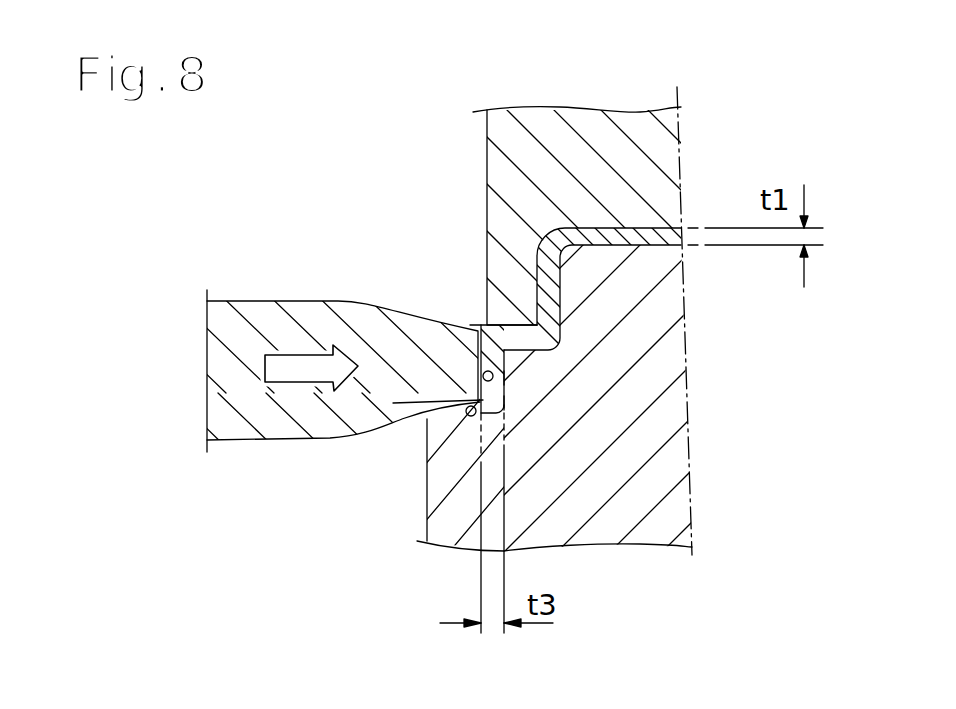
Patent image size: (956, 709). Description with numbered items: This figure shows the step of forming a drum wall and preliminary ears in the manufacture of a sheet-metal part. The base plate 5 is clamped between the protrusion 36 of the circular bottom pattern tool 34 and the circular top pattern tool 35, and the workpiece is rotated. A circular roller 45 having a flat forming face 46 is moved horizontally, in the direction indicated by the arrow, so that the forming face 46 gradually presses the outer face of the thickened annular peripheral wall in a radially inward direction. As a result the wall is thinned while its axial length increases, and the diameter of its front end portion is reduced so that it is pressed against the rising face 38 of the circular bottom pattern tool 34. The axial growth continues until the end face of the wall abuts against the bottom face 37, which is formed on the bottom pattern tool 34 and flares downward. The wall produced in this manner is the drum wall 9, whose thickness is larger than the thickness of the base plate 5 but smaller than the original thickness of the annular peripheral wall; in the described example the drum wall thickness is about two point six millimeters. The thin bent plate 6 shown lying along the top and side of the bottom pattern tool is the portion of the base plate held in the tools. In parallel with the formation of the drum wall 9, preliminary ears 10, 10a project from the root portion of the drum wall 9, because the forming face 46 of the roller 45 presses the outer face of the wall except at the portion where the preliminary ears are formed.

The base plate 5 is at (617, 227).
The reinforcing plate (thickness t1) 6 is at (493, 323).
The drum wall 9 is at (477, 328).
The preliminary ear 10 is at (478, 325).
The preliminary ear 10a is at (470, 412).
The circular bottom pattern tool 34 is at (643, 530).
The circular top pattern tool 35 is at (537, 110).
The protrusion 36 is at (684, 328).
The bottom face 37 is at (504, 403).
The rising face 38 is at (504, 378).
The circular roller 45 is at (253, 305).
The flat forming face 46 is at (393, 403).